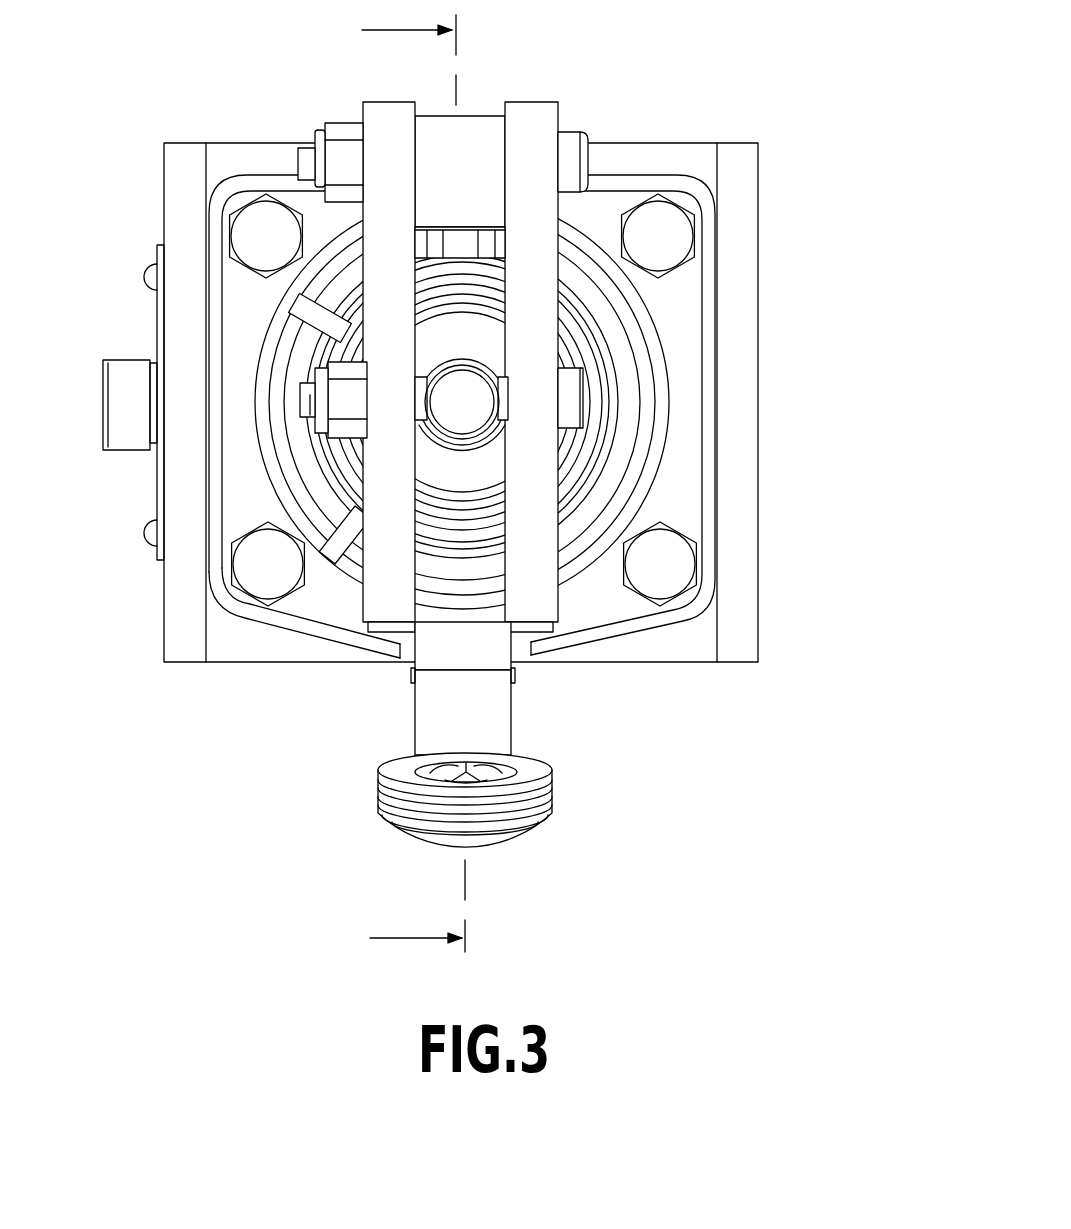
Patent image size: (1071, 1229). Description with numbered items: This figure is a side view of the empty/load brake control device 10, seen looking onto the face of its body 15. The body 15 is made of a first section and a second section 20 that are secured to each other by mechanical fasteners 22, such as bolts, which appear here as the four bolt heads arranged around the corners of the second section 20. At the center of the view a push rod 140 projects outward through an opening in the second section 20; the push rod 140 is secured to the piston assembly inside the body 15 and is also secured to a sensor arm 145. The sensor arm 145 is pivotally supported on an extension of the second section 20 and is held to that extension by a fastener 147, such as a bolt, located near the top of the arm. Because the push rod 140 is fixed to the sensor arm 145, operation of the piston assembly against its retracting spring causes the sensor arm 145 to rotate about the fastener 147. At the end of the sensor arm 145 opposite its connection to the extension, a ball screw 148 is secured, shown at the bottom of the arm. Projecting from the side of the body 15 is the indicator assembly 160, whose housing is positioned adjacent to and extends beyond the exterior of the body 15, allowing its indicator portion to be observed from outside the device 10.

The empty/load brake control device 10 is at (776, 100).
The body 15 is at (762, 323).
The second section 20 is at (688, 483).
The mechanical fasteners 22 is at (260, 222).
The push rod 140 is at (462, 402).
The sensor arm 145 is at (545, 595).
The fastener 147 is at (568, 142).
The ball screw 148 is at (552, 795).
The indicator assembly 160 is at (127, 385).